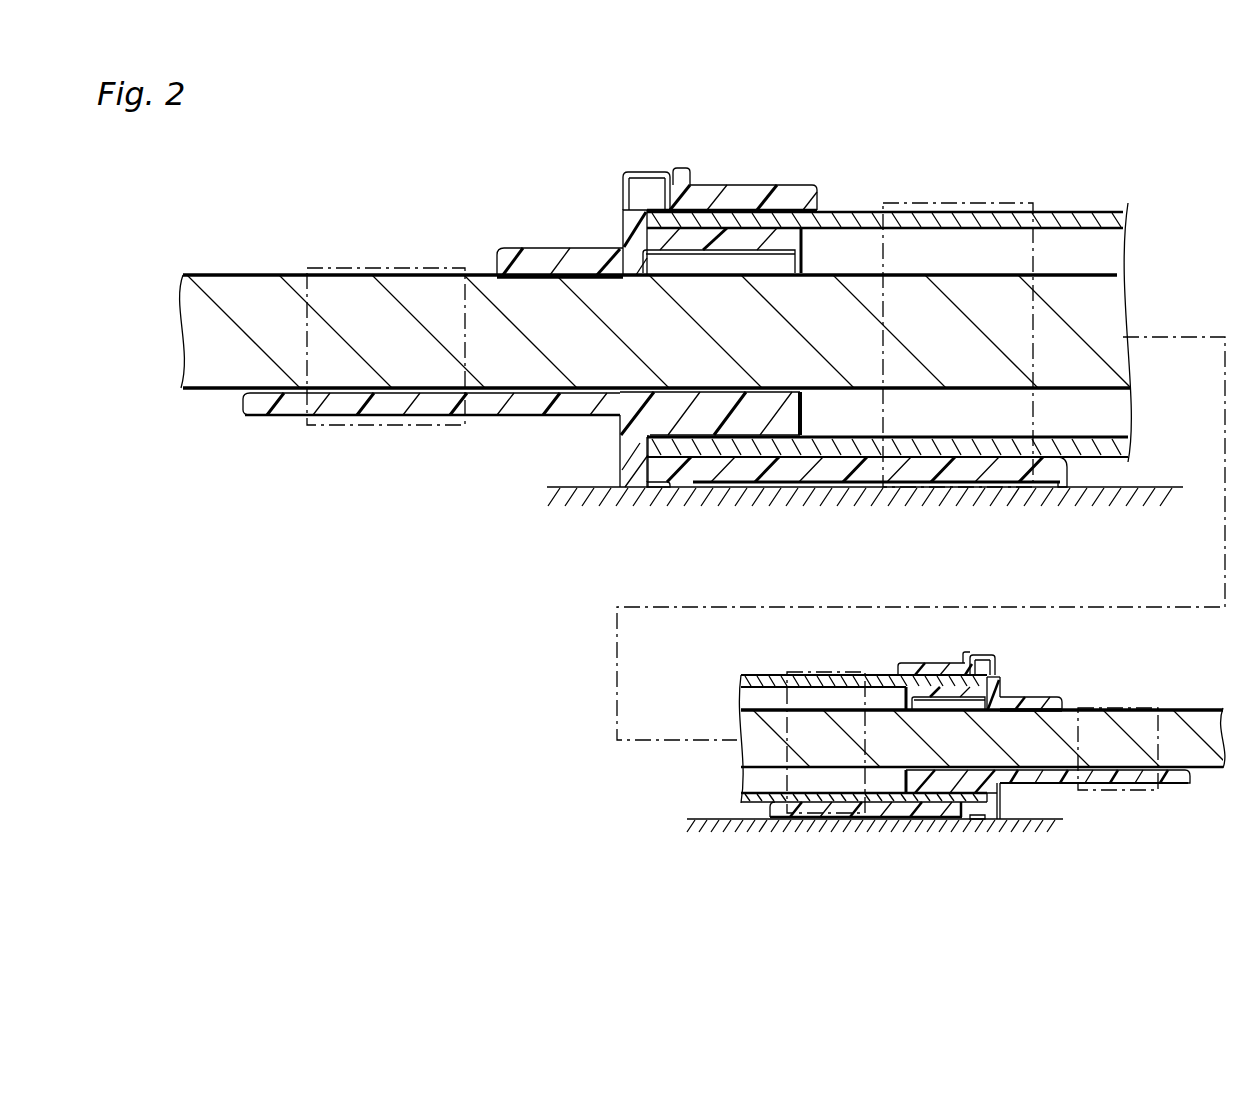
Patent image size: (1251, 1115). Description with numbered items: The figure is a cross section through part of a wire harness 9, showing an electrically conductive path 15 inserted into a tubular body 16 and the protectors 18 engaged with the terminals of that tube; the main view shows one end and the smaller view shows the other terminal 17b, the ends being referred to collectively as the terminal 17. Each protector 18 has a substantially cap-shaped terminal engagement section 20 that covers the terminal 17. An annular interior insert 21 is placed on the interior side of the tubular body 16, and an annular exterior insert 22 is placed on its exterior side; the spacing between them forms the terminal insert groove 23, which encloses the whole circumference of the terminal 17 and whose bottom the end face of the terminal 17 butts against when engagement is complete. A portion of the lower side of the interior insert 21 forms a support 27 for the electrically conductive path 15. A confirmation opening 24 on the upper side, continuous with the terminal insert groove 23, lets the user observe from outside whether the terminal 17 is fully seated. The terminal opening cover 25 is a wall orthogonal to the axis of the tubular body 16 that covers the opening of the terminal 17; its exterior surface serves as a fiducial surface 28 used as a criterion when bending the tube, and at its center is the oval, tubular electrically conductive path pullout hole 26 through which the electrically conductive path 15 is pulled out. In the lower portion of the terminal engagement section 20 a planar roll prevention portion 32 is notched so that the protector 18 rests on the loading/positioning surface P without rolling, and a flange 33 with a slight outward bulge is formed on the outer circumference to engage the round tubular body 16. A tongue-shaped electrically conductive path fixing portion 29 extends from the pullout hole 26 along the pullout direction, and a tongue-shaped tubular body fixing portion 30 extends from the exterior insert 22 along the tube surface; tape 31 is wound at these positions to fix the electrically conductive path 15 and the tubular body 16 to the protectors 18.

The wire harness 9 is at (322, 158).
The electrically conductive path 15 is at (304, 270).
The tubular body 16 is at (1081, 203).
The terminal 17 is at (625, 437).
The other terminal 17b is at (1000, 800).
The protector 18 is at (541, 245).
The terminal engagement section 20 is at (624, 240).
The interior insert 21 is at (803, 228).
The exterior insert 22 is at (777, 192).
The terminal insert groove 23 is at (770, 460).
The confirmation opening 24 is at (652, 190).
The terminal opening cover 25 is at (624, 222).
The electrically conductive path pullout hole 26 is at (525, 284).
The support 27 is at (787, 418).
The fiducial surface 28 is at (648, 447).
The electrically conductive path fixing portion 29 is at (281, 415).
The tubular body fixing portion 30 is at (1010, 465).
The tape 31 is at (378, 428).
The roll prevention portion 32 is at (637, 489).
The flange 33 is at (680, 172).
The loading/positioning surface P is at (1175, 487).